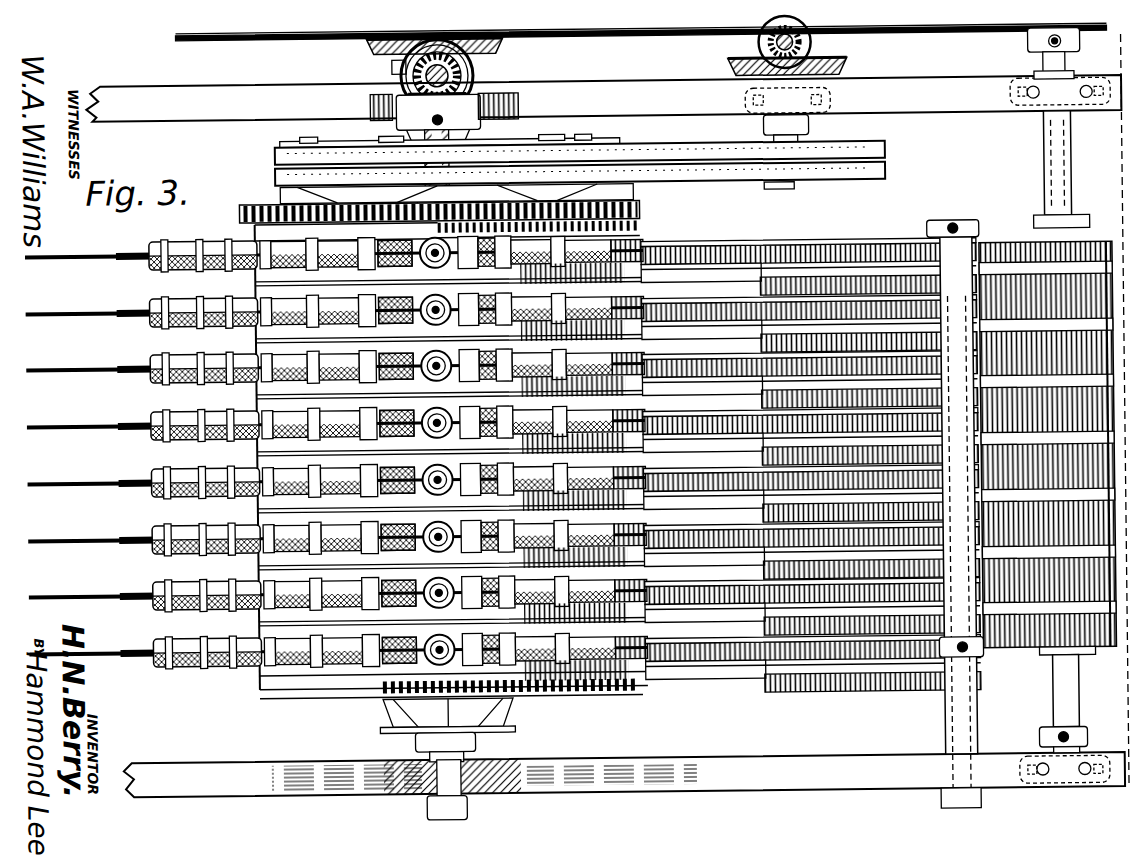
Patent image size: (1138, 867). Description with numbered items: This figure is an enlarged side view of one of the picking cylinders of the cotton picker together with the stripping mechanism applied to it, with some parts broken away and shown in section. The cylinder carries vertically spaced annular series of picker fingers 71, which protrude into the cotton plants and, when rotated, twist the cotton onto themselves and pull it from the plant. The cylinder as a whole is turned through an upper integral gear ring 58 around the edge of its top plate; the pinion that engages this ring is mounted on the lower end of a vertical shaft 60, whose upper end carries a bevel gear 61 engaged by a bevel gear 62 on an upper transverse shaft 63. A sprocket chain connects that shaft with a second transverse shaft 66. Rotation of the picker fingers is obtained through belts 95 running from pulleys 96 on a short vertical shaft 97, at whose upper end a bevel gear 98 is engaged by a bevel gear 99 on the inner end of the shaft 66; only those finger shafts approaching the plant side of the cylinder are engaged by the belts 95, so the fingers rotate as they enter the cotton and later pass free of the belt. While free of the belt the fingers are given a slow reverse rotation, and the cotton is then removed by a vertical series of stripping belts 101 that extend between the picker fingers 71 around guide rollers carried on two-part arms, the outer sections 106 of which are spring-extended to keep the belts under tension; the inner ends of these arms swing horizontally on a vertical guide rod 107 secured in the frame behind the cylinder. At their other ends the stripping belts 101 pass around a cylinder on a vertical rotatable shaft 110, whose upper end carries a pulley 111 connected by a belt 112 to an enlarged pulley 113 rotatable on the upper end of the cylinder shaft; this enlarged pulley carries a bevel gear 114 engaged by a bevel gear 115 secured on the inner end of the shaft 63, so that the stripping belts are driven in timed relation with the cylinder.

The gear ring 58 is at (643, 211).
The vertical shaft 60 is at (400, 108).
The bevel gear 61 is at (472, 96).
The bevel gear 62 is at (468, 72).
The upper transverse shaft 63 is at (410, 72).
The second transverse shaft 66 is at (781, 50).
The picker fingers 71 is at (45, 255).
The belts 95 is at (656, 172).
The pulleys 96 is at (852, 182).
The short vertical shaft 97 is at (812, 136).
The bevel gear 98 is at (820, 64).
The bevel gear 99 is at (762, 46).
The stripping belts 101 is at (862, 620).
The arm sections 106 is at (806, 644).
The vertical guide rod 107 is at (964, 702).
The vertical rotatable shaft 110 is at (1074, 164).
The pulley 111 is at (1084, 46).
The belt 112 is at (900, 30).
The enlarged pulley 113 is at (606, 32).
The bevel gear 114 is at (375, 45).
The bevel gear 115 is at (396, 64).